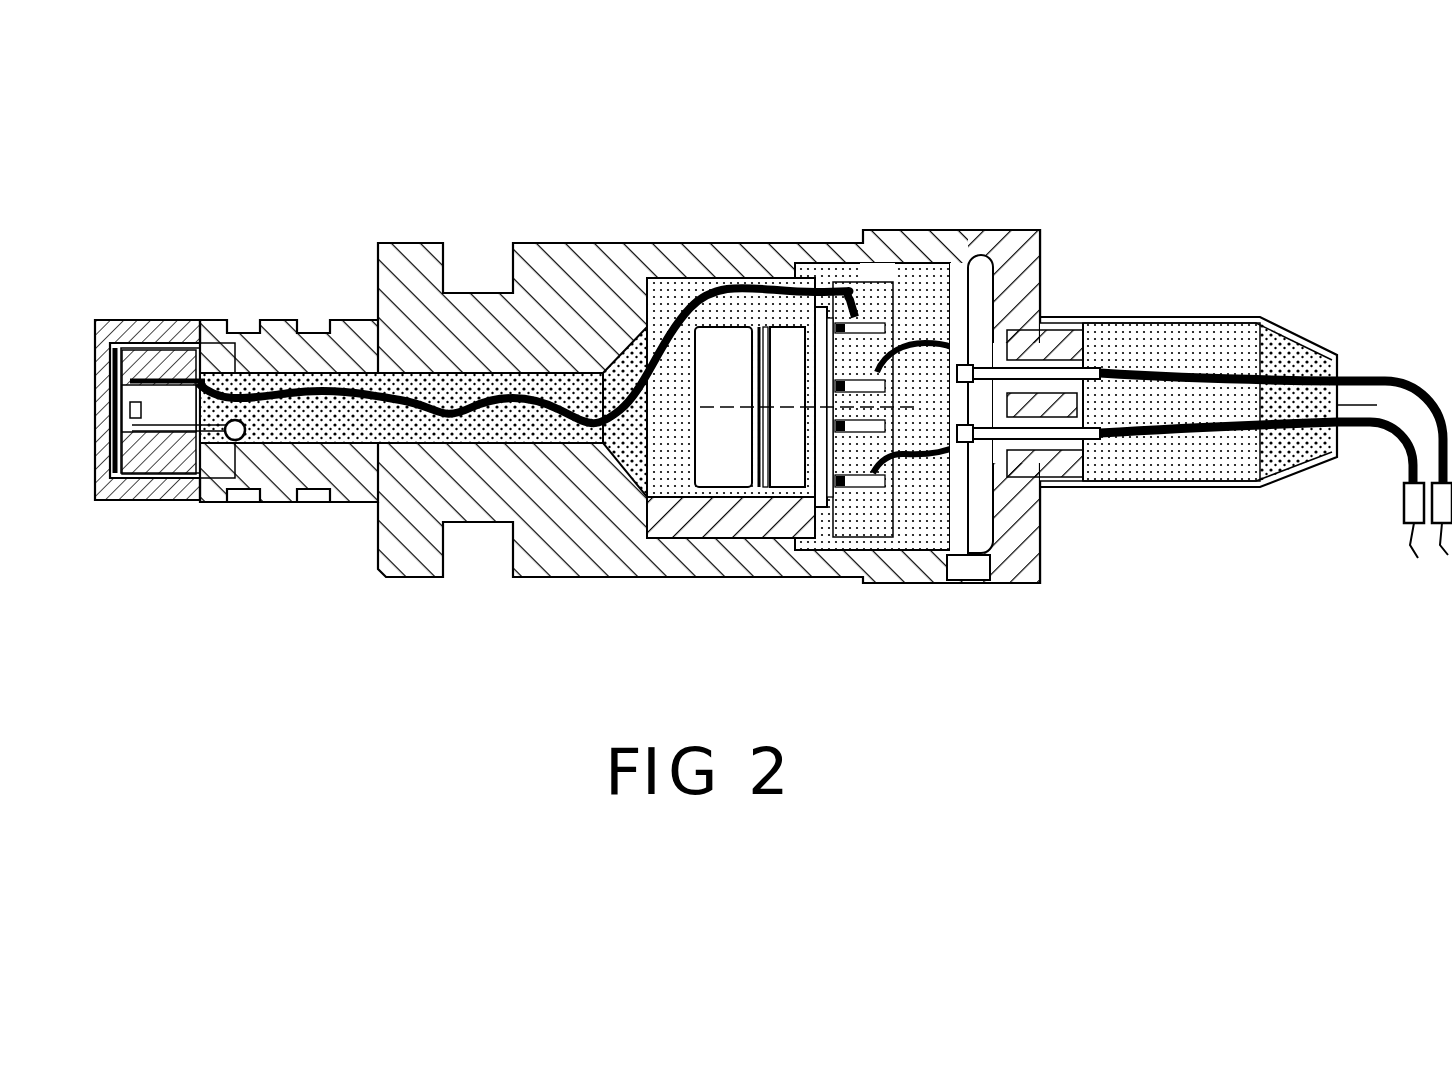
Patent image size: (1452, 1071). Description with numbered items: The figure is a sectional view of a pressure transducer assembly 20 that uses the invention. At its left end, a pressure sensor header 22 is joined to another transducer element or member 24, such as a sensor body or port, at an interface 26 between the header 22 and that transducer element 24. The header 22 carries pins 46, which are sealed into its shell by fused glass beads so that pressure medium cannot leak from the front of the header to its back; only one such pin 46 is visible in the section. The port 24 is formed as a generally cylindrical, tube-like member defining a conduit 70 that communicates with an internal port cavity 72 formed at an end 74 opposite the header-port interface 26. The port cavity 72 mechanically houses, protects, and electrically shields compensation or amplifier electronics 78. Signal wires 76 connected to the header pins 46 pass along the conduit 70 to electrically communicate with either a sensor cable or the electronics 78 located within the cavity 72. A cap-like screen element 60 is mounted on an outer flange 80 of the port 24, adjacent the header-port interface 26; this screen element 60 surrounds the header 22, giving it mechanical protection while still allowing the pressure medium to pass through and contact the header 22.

The pressure transducer assembly 20 is at (585, 152).
The pressure sensor header 22 is at (142, 357).
The transducer element or member 24 is at (580, 288).
The interface 26 is at (228, 365).
The pin 46 is at (208, 372).
The cap-like screen element 60 is at (122, 340).
The conduit 70 is at (378, 428).
The internal port cavity 72 is at (905, 533).
The end 74 is at (978, 285).
The signal wires 76 is at (480, 397).
The electronics 78 is at (893, 425).
The outer flange 80 is at (205, 505).